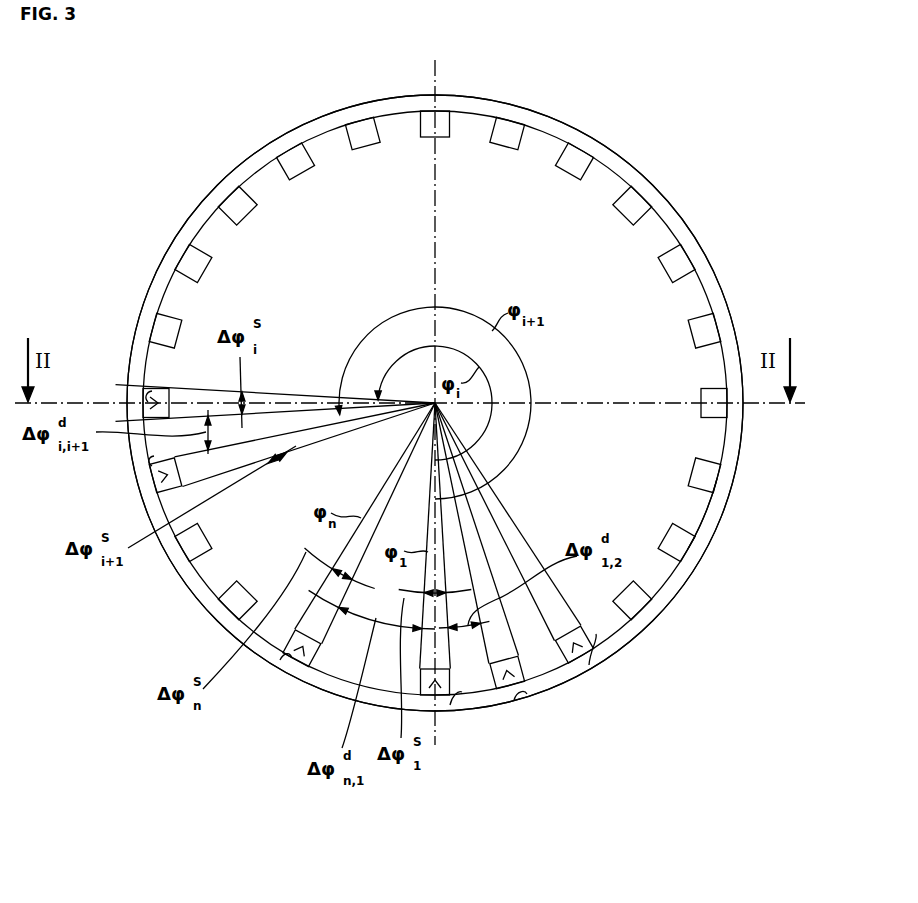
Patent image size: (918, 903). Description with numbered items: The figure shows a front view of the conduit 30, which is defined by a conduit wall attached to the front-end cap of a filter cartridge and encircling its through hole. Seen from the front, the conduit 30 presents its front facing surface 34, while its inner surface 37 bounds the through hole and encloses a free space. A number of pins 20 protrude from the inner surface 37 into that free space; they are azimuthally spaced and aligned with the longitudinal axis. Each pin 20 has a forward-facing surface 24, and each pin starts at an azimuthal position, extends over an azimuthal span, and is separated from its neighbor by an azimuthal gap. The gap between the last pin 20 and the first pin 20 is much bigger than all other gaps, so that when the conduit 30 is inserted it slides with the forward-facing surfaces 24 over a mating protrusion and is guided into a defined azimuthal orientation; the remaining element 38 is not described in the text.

The pin 20 is at (634, 690).
The forward-facing surface 24 is at (617, 733).
The conduit 30 is at (709, 576).
The front facing surface 34 is at (718, 280).
The inner surface 37 is at (702, 498).
The outer circumferential surface 38 is at (739, 337).